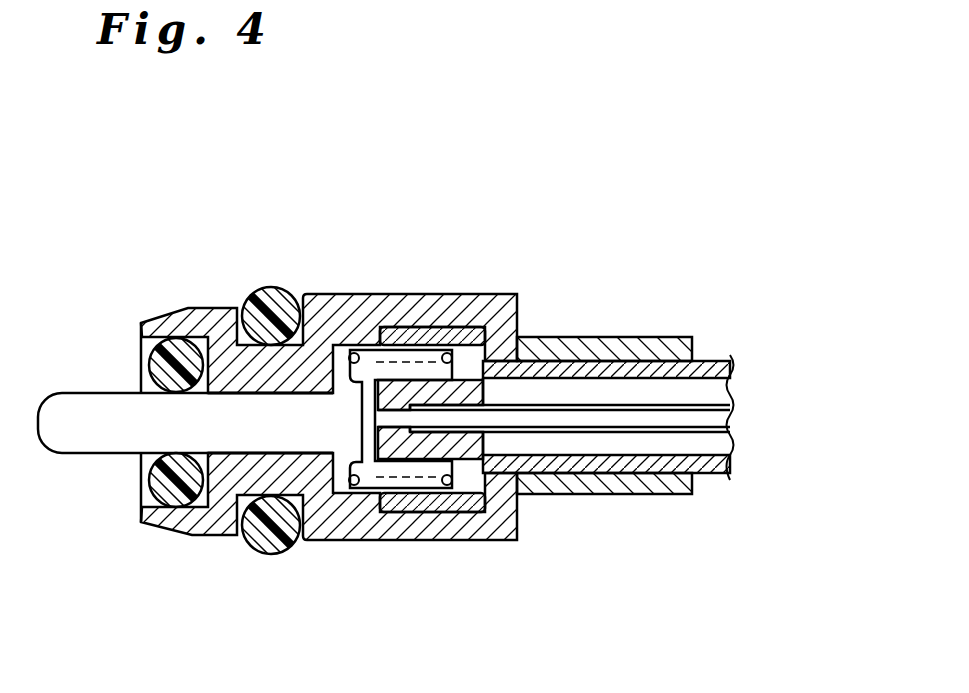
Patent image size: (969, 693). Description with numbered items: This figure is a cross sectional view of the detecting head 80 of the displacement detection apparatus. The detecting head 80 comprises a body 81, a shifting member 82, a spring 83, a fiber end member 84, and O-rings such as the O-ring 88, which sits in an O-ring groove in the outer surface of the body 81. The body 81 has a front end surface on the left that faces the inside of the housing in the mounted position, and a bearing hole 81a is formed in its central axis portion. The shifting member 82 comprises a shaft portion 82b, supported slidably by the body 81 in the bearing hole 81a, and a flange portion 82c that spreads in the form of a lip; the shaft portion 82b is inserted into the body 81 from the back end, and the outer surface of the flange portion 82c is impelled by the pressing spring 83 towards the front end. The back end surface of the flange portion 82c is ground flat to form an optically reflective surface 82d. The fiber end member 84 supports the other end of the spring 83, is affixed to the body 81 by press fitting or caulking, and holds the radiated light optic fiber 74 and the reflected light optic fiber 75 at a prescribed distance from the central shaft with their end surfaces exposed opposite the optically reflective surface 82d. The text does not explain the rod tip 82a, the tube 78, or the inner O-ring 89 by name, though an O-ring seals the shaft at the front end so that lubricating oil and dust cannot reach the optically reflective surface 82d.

The detecting head 80 is at (467, 117).
The body 81 is at (412, 296).
The bearing hole 81a is at (228, 395).
The shifting member 82 is at (110, 445).
The rod tip 82a is at (40, 412).
The shaft portion 82b is at (243, 440).
The flange portion 82c is at (340, 483).
The optically reflective surface 82d is at (368, 380).
The spring 83 is at (397, 512).
The fiber end member 84 is at (618, 494).
The tube 78 is at (717, 360).
The radiated light optic fiber 74 is at (727, 413).
The reflected light optic fiber 75 is at (570, 418).
The O-ring 88 is at (270, 295).
The inner O-ring 89 is at (152, 337).